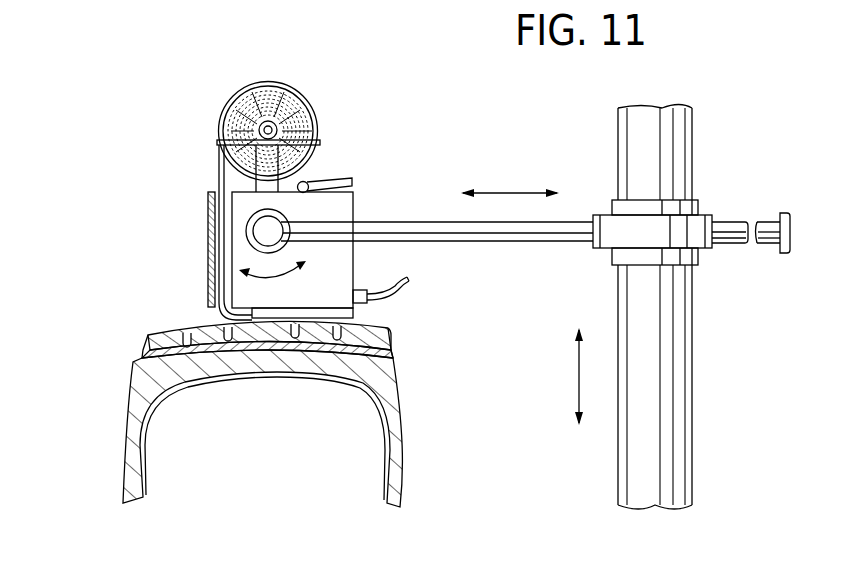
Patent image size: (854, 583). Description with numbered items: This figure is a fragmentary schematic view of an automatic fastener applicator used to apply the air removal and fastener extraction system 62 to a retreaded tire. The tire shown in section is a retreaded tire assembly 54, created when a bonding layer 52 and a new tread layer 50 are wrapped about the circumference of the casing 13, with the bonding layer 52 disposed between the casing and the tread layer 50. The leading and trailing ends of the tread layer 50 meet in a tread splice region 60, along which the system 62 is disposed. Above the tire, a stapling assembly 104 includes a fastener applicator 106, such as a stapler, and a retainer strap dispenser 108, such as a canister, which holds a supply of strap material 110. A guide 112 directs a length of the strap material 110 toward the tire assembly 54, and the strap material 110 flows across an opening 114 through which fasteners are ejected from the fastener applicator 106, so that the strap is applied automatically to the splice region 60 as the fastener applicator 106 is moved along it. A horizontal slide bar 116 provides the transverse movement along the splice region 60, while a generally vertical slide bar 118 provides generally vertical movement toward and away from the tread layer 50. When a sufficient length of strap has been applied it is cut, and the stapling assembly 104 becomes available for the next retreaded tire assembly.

The casing 13 is at (387, 410).
The tread layer 50 is at (150, 348).
The bonding layer 52 is at (365, 358).
The retreaded tire assembly 54 is at (121, 388).
The tread splice region 60 is at (383, 357).
The air removal and fastener extraction system 62 is at (392, 312).
The stapling assembly 104 is at (345, 152).
The fastener applicator 106 is at (347, 272).
The retainer strap dispenser 108 is at (292, 87).
The strap material 110 is at (305, 122).
The guide 112 is at (208, 245).
The opening 114 is at (242, 322).
The horizontal slide bar 116 is at (505, 221).
The vertical slide bar 118 is at (668, 354).